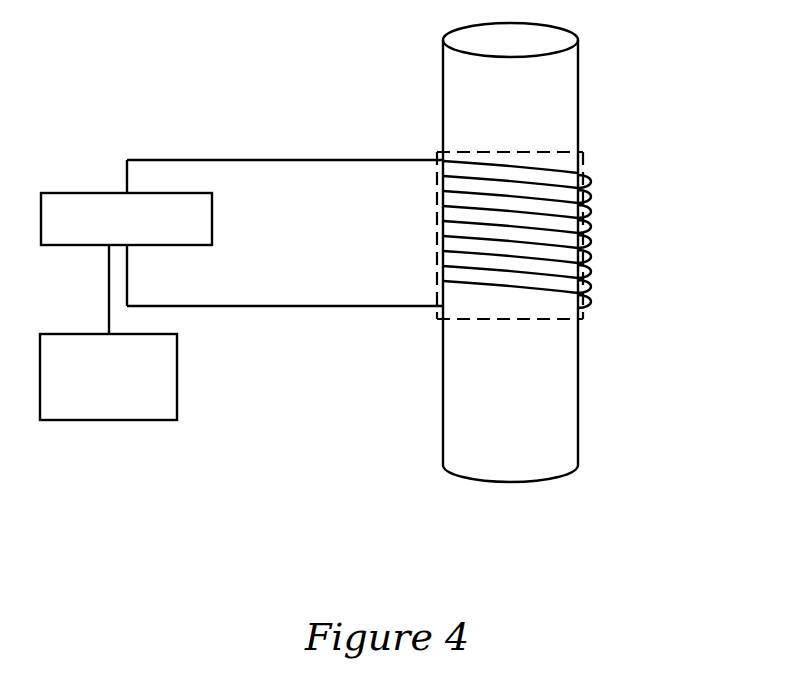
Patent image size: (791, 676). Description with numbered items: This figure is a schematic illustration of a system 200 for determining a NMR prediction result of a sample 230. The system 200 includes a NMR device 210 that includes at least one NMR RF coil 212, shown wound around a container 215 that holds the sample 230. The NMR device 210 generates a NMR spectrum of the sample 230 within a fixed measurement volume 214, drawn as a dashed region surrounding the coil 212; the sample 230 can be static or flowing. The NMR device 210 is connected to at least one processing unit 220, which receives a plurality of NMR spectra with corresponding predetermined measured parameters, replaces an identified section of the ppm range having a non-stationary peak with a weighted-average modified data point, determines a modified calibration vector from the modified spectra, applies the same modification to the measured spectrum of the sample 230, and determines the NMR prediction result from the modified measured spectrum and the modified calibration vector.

The system 200 is at (122, 46).
The NMR device 210 is at (214, 218).
The NMR RF coil 212 is at (456, 203).
The fixed measurement volume 214 is at (460, 319).
The sample container 215 is at (579, 106).
The processing unit 220 is at (178, 376).
The sample 230 is at (518, 302).